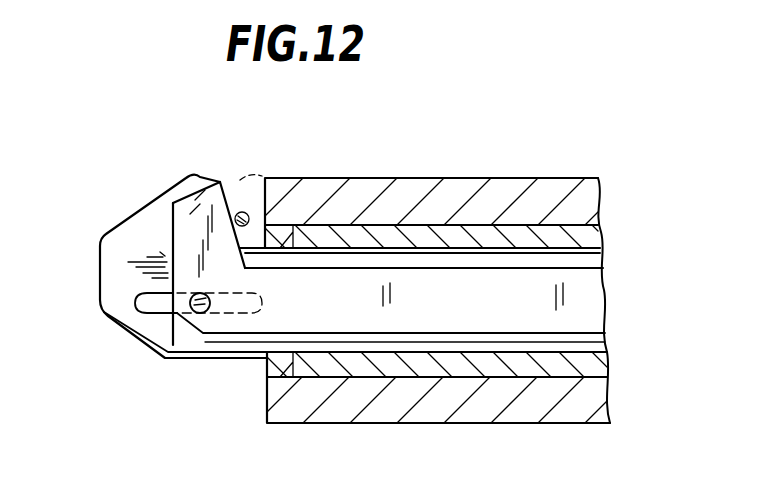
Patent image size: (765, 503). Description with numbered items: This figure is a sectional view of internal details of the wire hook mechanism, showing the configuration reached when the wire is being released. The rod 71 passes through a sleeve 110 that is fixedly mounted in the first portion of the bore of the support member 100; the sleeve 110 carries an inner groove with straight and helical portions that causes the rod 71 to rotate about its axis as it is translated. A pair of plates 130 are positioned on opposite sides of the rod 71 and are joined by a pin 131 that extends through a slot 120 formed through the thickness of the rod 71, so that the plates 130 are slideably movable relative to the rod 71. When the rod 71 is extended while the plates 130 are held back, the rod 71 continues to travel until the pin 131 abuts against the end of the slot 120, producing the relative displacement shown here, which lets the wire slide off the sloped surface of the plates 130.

The rod 71 is at (148, 208).
The support member 100 is at (502, 175).
The sleeve 110 is at (548, 233).
The slot 120 is at (142, 308).
The plates 130 is at (490, 313).
The pin 131 is at (203, 316).